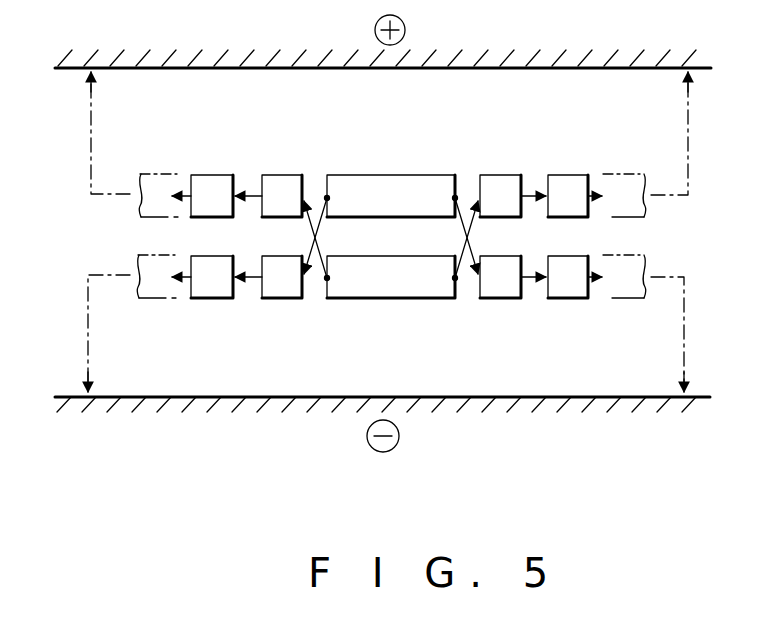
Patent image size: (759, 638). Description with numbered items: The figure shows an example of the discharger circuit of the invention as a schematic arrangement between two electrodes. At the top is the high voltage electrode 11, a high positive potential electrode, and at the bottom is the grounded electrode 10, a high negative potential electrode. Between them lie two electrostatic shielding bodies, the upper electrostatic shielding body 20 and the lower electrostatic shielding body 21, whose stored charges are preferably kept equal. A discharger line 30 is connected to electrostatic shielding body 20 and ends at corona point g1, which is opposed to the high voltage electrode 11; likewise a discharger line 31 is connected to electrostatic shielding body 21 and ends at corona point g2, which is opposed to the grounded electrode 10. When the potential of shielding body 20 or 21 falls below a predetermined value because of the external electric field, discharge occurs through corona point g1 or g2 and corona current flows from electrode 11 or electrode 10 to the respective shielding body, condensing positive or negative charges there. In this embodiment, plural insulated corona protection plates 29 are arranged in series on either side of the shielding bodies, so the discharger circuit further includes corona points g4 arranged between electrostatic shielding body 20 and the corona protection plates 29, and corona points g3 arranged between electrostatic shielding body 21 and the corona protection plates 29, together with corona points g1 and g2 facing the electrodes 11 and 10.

The grounded electrode 10 is at (491, 400).
The high voltage electrode 11 is at (504, 66).
The electrostatic shielding body 20 is at (388, 298).
The electrostatic shielding body 21 is at (387, 175).
The corona protection plates 29 is at (216, 178).
The discharger line 30 is at (91, 166).
The discharger line 31 is at (88, 326).
The corona point g1 is at (86, 72).
The corona point g2 is at (86, 388).
The corona points g3 is at (172, 284).
The corona points g4 is at (172, 188).